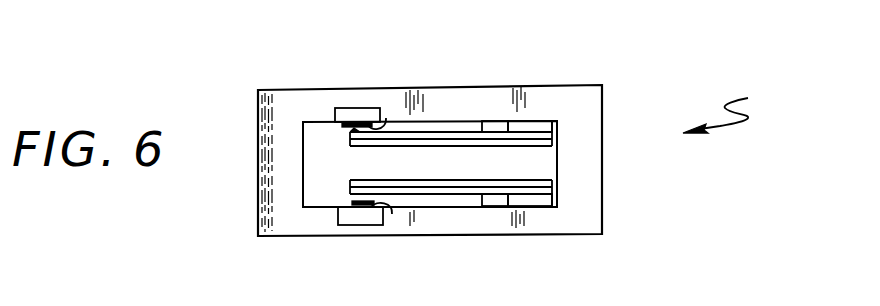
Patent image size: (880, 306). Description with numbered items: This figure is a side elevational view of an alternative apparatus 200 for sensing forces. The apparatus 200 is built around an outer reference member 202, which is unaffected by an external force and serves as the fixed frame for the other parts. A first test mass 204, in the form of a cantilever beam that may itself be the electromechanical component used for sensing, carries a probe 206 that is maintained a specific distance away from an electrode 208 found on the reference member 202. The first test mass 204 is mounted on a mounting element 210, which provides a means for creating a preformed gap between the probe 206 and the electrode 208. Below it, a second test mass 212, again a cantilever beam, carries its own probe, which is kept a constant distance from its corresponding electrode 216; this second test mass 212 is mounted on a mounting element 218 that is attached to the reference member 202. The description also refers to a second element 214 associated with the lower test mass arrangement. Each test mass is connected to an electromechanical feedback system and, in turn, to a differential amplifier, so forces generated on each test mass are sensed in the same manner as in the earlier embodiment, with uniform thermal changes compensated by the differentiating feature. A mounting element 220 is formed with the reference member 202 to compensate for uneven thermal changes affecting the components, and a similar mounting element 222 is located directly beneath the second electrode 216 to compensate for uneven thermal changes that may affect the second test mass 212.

The alternative apparatus 200 is at (749, 108).
The outer reference member 202 is at (445, 100).
The first test mass 204 is at (482, 137).
The probe 206 is at (350, 133).
The electrode 208 is at (386, 118).
The mounting element 210 is at (540, 125).
The second test mass 212 is at (480, 190).
The second substrate 214 is at (350, 200).
The electrode 216 is at (392, 214).
The mounting element 218 is at (538, 200).
The mounting element 220 is at (350, 108).
The mounting element 222 is at (350, 223).